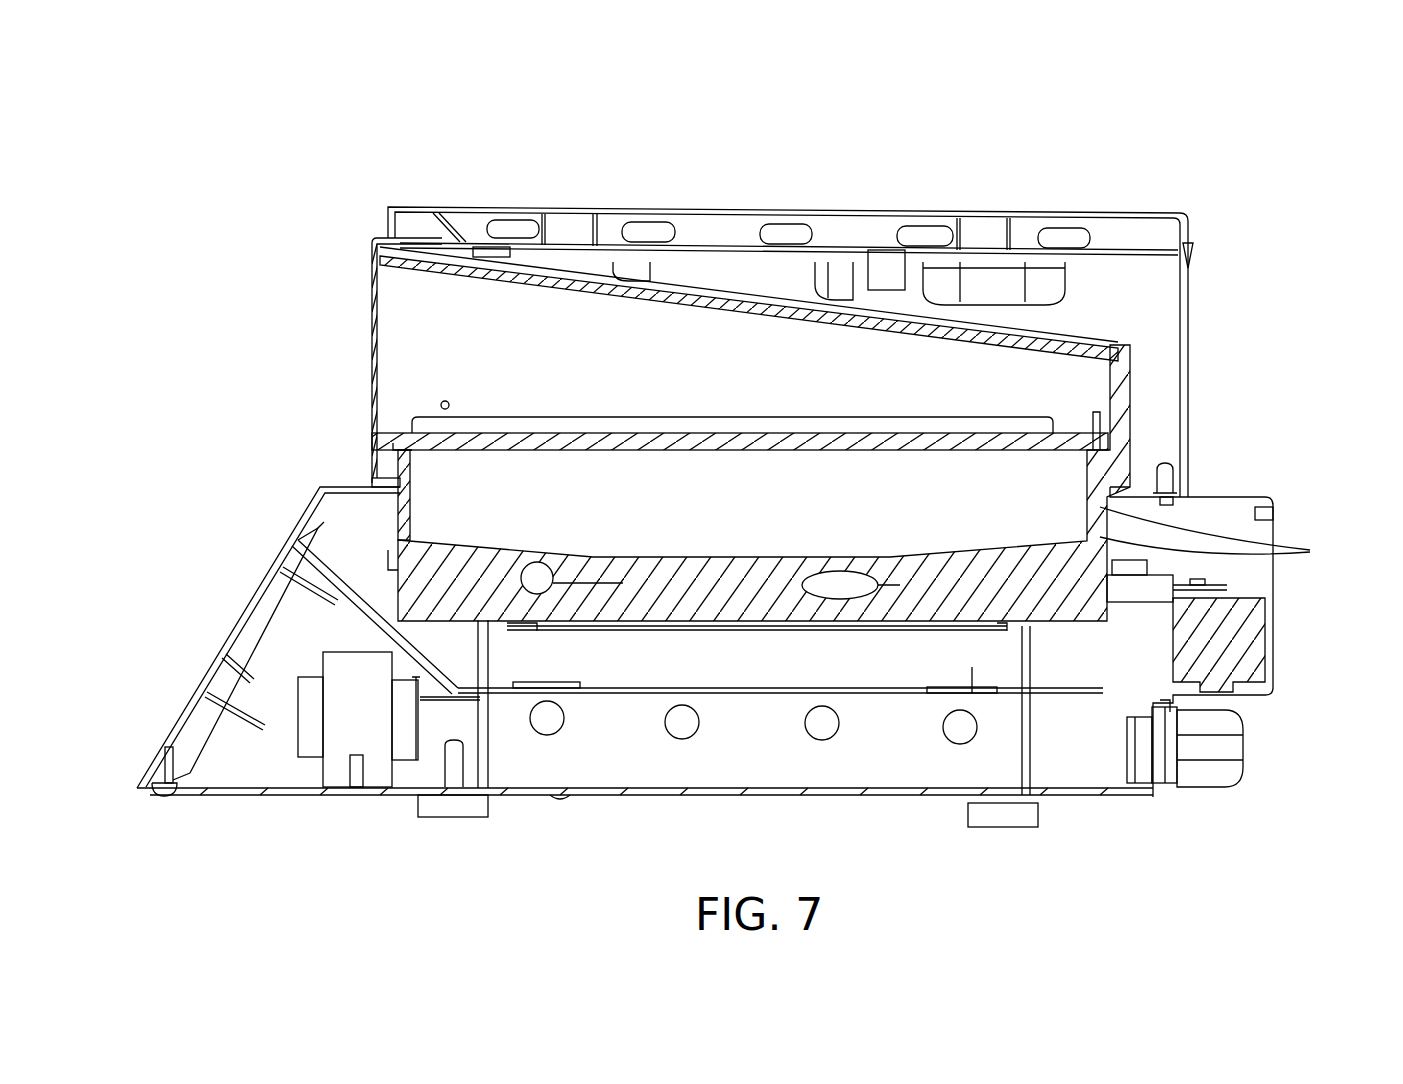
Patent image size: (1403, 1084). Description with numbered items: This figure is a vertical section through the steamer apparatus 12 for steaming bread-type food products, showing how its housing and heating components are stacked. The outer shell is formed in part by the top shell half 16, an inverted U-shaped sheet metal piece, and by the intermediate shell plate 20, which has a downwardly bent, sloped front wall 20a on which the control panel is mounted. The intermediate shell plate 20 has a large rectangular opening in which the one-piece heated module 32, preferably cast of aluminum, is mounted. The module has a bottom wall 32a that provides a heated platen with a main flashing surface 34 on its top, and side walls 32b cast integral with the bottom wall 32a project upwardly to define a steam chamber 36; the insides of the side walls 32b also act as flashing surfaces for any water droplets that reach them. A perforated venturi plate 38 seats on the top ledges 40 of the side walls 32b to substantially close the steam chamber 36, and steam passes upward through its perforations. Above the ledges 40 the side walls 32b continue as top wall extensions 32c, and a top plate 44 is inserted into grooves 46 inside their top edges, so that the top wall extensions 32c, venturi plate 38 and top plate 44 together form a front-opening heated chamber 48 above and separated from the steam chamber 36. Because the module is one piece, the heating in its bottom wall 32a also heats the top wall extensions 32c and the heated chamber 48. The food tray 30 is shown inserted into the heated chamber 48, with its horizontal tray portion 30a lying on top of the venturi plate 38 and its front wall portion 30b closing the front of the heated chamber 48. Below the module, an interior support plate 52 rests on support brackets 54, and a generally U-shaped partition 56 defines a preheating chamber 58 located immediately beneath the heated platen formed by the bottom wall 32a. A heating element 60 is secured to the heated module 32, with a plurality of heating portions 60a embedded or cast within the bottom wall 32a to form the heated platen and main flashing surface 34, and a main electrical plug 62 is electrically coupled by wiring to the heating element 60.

The steamer apparatus 12 is at (855, 294).
The top shell half 16 is at (836, 352).
The intermediate shell plate 20 is at (754, 653).
The front wall 20a is at (250, 600).
The food tray 30 is at (761, 320).
The horizontal tray portion 30a is at (578, 433).
The front wall portion 30b is at (372, 318).
The one-piece heated module 32 is at (816, 582).
The bottom wall 32a is at (727, 592).
The side walls 32b is at (452, 488).
The top wall extensions 32c is at (1122, 364).
The main flashing surface 34 is at (620, 557).
The steam chamber 36 is at (1095, 437).
The perforated venturi plate 38 is at (487, 450).
The top ledges 40 is at (397, 443).
The top plate 44 is at (626, 292).
The grooves 46 is at (1103, 340).
The heated chamber 48 is at (795, 360).
The interior support plate 52 is at (847, 703).
The support brackets 54 is at (578, 753).
The U-shaped partition 56 is at (972, 667).
The preheating chamber 58 is at (645, 668).
The heating element 60 is at (1165, 598).
The heating portions 60a is at (537, 575).
The main electrical plug 62 is at (1210, 760).